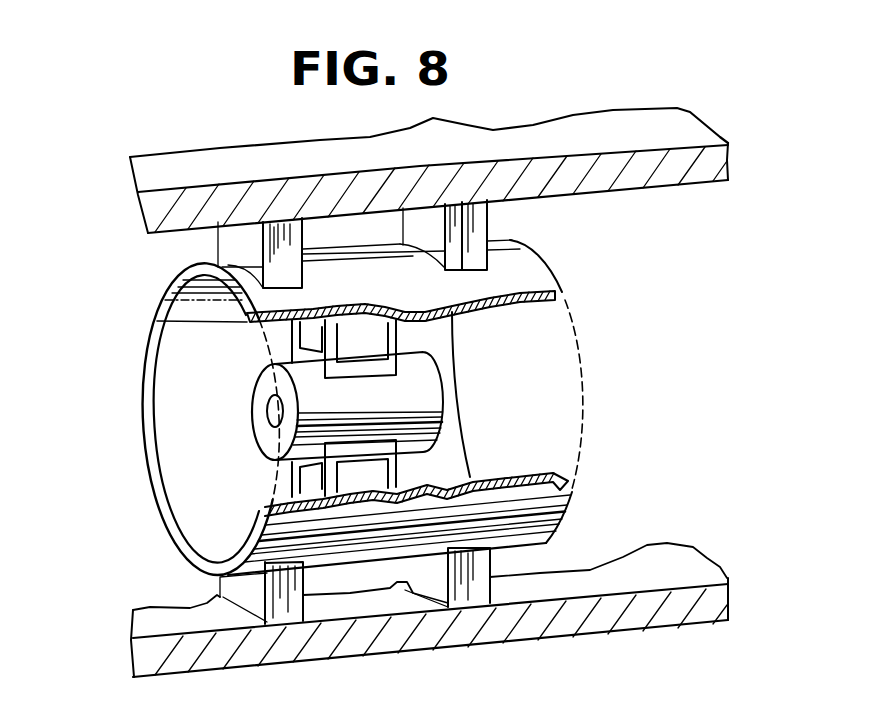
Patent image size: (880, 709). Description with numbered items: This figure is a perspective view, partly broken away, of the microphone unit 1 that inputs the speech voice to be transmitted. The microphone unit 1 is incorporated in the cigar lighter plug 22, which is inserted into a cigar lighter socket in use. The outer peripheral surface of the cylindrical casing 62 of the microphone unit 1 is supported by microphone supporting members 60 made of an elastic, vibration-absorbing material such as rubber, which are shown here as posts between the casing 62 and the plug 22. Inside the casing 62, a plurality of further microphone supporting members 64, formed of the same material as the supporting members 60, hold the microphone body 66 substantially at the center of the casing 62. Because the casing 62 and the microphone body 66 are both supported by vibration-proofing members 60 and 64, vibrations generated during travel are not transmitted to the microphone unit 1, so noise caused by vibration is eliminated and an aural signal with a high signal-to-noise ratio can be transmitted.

The microphone unit 1 is at (147, 447).
The cigar lighter plug 22 is at (604, 163).
The microphone supporting member 60 is at (480, 222).
The cylindrical casing 62 is at (165, 379).
The microphone supporting members 64 is at (392, 338).
The microphone body 66 is at (435, 403).